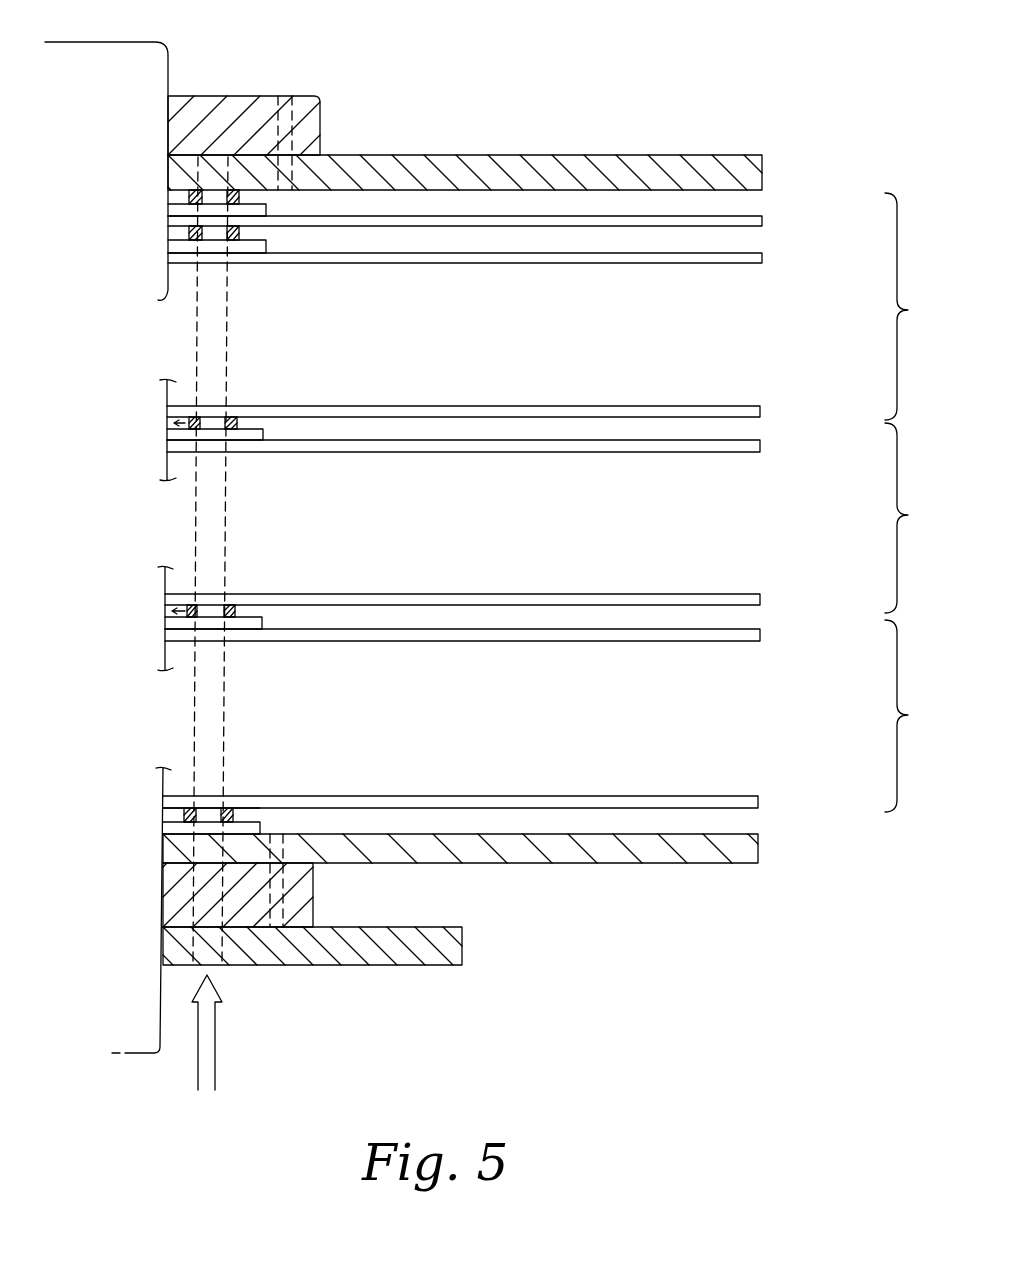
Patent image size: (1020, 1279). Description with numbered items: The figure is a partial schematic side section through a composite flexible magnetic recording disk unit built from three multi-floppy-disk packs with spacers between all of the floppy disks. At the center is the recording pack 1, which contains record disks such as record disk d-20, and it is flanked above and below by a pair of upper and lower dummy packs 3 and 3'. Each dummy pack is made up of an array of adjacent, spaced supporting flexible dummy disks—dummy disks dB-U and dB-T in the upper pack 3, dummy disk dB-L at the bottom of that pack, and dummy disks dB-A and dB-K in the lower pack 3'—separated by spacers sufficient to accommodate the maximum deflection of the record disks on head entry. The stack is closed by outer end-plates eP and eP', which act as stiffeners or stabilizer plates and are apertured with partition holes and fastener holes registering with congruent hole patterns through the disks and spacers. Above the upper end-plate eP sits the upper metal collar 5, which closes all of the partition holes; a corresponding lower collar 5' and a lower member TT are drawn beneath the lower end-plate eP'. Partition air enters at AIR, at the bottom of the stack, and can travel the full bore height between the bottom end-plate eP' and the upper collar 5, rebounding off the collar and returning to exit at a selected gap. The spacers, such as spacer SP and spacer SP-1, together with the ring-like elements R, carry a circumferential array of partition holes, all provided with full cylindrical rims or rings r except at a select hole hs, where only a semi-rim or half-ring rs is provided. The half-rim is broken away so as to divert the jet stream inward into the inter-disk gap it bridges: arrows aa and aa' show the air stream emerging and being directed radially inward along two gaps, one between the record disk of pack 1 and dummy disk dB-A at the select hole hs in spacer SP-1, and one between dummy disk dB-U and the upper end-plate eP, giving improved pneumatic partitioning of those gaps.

The spacer SP-1 is at (168, 63).
The upper collar 5 is at (273, 127).
The upper end-plate eP is at (488, 138).
The ring r is at (193, 190).
The spacer plate SP is at (173, 208).
The ring plate R is at (177, 235).
The dummy disk dB-U is at (514, 214).
The top disc dB-T is at (511, 251).
The upper dummy pack 3 is at (907, 306).
The lower disc dB-L is at (511, 404).
The select hole hs is at (203, 417).
The arrow aa is at (222, 460).
The disc 20 d-20 is at (509, 438).
The recording pack 1 is at (907, 518).
The semi-rim rs is at (235, 608).
The arrow aa' is at (225, 653).
The dummy disk dB-A is at (509, 630).
The lower dummy pack 3' is at (909, 716).
The disc K dB-K is at (507, 797).
The lower end-plate eP' is at (486, 872).
The end block prime 5' is at (264, 880).
The turntable TT is at (465, 945).
The air entry AIR is at (197, 1050).